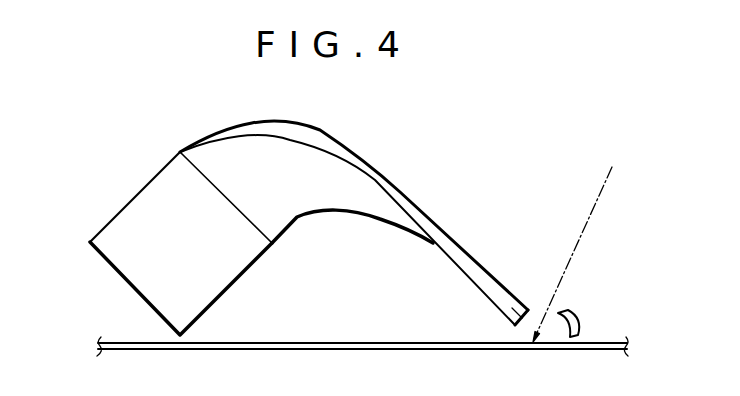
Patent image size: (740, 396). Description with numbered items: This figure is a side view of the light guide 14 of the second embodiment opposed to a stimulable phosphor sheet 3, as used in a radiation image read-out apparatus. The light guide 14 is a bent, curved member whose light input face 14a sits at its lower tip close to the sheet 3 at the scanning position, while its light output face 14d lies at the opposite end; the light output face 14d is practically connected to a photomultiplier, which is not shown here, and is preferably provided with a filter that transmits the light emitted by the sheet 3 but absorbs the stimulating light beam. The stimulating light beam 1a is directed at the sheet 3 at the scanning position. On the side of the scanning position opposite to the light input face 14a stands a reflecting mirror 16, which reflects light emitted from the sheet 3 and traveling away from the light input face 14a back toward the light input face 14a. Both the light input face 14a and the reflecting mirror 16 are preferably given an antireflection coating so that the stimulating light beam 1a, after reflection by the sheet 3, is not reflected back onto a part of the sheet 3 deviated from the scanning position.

The light guide 14 is at (420, 171).
The light output face 14d is at (153, 208).
The light input face 14a is at (527, 318).
The stimulating light beam 1a is at (575, 250).
The reflecting mirror 16 is at (580, 327).
The stimulable phosphor sheet 3 is at (317, 352).